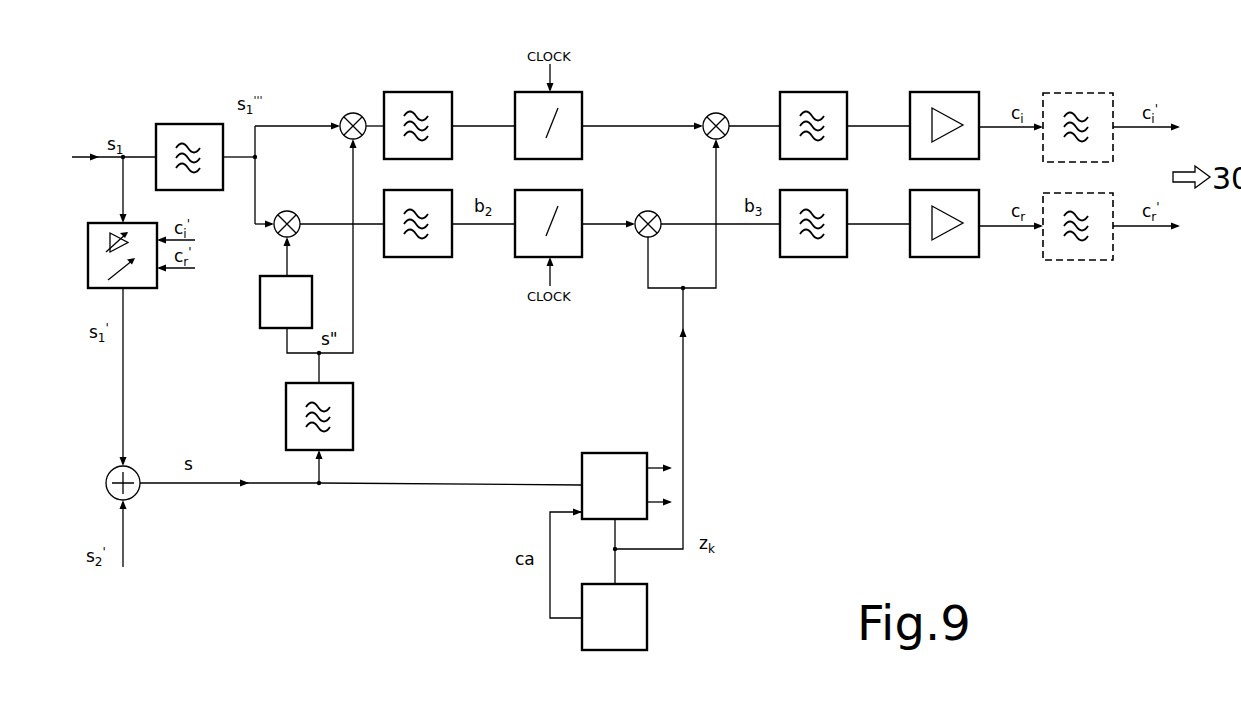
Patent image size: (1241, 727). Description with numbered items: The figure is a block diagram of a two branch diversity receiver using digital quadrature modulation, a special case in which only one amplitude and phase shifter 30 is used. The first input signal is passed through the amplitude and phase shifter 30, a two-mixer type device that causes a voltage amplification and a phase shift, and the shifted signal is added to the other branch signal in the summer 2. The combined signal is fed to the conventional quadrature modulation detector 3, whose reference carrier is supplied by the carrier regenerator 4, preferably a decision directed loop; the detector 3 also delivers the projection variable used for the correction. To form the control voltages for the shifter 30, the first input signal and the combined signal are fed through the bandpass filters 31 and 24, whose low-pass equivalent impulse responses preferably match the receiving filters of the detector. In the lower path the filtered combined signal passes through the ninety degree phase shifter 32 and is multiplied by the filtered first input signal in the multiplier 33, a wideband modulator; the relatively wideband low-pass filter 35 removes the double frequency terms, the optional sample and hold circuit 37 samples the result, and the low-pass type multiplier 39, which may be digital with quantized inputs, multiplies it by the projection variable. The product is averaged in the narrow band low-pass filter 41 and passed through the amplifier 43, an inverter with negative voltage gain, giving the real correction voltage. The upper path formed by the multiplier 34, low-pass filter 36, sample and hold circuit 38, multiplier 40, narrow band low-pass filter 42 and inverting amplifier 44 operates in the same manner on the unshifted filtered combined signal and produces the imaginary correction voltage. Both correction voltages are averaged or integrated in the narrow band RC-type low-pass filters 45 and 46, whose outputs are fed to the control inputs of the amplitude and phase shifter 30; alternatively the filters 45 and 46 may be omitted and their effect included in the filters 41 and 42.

The summer 2 is at (114, 467).
The detector 3 is at (590, 453).
The carrier regenerator 4 is at (647, 617).
The bandpass filter 24 is at (354, 428).
The amplitude and phase shifter 30 is at (110, 223).
The bandpass filter 31 is at (181, 124).
The 90° phase shifter 32 is at (260, 326).
The multiplier 33 is at (297, 213).
The multiplier 34 is at (353, 113).
The low-pass filter 35 is at (427, 257).
The low-pass filter 36 is at (435, 92).
The sample and hold circuit 37 is at (576, 257).
The sample and hold circuit 38 is at (580, 92).
The multiplier 39 is at (650, 211).
The multiplier 40 is at (722, 113).
The narrow band low-pass filter 41 is at (835, 257).
The narrow band low-pass filter 42 is at (845, 92).
The amplifier 43 is at (955, 257).
The amplifier 44 is at (968, 92).
The narrow band low-pass filter 45 is at (1090, 260).
The narrow band low-pass filter 46 is at (1090, 93).